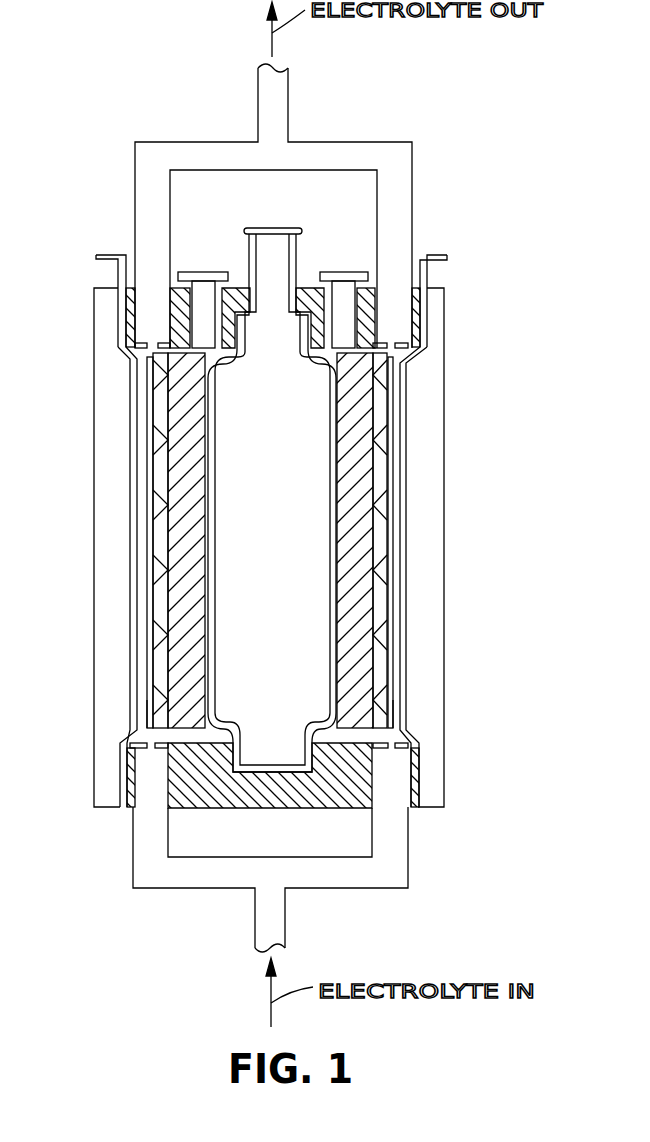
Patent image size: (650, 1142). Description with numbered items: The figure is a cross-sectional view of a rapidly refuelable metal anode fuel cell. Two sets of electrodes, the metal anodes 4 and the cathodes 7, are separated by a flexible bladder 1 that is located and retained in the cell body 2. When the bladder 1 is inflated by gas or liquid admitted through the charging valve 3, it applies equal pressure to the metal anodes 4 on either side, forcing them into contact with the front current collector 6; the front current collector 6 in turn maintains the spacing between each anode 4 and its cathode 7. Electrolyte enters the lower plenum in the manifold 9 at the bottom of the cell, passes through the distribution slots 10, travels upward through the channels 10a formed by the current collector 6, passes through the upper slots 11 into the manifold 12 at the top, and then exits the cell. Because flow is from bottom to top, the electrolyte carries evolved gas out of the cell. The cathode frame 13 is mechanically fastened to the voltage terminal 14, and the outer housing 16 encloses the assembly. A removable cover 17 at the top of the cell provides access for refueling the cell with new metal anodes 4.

The flexible bladder 1 is at (330, 518).
The cell body 2 is at (240, 808).
The charging valve 3 is at (263, 228).
The metal anode 4 is at (332, 420).
The front current collector 6 is at (170, 544).
The cathode 7 is at (150, 606).
The manifold 9 is at (388, 889).
The distribution slot 10 is at (147, 748).
The channel 10a is at (150, 700).
The upper slot 11 is at (402, 318).
The manifold 12 is at (362, 142).
The cathode frame 13 is at (133, 443).
The voltage terminal 14 is at (104, 255).
The outer housing 16 is at (95, 662).
The removable cover 17 is at (197, 272).